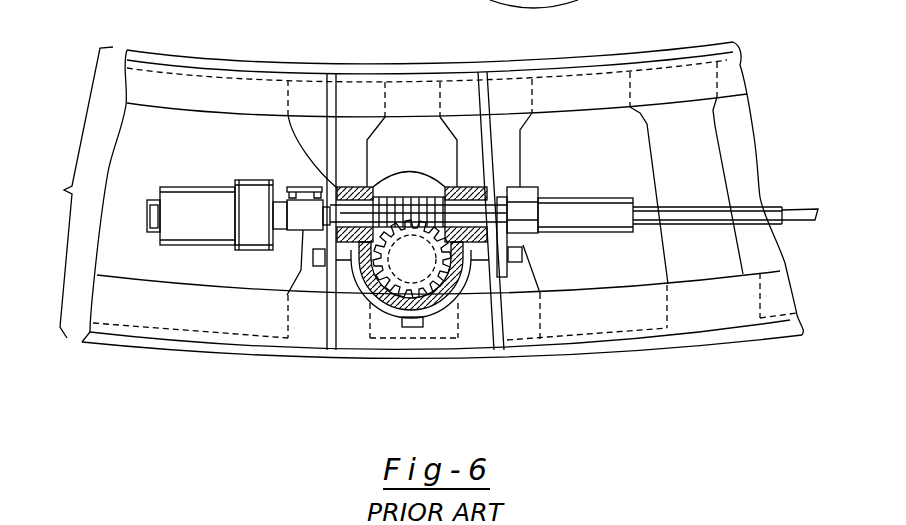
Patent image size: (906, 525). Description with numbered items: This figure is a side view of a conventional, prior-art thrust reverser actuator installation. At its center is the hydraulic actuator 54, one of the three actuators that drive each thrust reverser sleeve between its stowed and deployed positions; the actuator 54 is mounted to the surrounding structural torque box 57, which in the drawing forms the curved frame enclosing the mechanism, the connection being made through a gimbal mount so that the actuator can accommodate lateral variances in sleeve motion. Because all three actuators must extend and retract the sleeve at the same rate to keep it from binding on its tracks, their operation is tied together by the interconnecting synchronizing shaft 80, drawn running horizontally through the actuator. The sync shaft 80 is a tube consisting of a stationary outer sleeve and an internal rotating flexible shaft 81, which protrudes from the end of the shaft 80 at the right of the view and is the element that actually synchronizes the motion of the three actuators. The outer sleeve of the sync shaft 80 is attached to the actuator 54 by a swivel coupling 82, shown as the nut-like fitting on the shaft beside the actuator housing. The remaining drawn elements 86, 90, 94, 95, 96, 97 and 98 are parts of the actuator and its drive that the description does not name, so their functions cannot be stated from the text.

The hydraulic actuator 54 is at (458, 301).
The structural torque box 57 is at (648, 396).
The synchronizing shaft 80 is at (750, 207).
The internal rotating flexible shaft 81 is at (806, 209).
The swivel coupling 82 is at (530, 187).
The bore 86 is at (403, 264).
The worm 90 is at (410, 197).
The worm wheel 94 is at (449, 290).
The motor shaft end 95 is at (145, 217).
The motor 96 is at (198, 196).
The coupling block 97 is at (295, 197).
The mounting bracket 98 is at (305, 186).